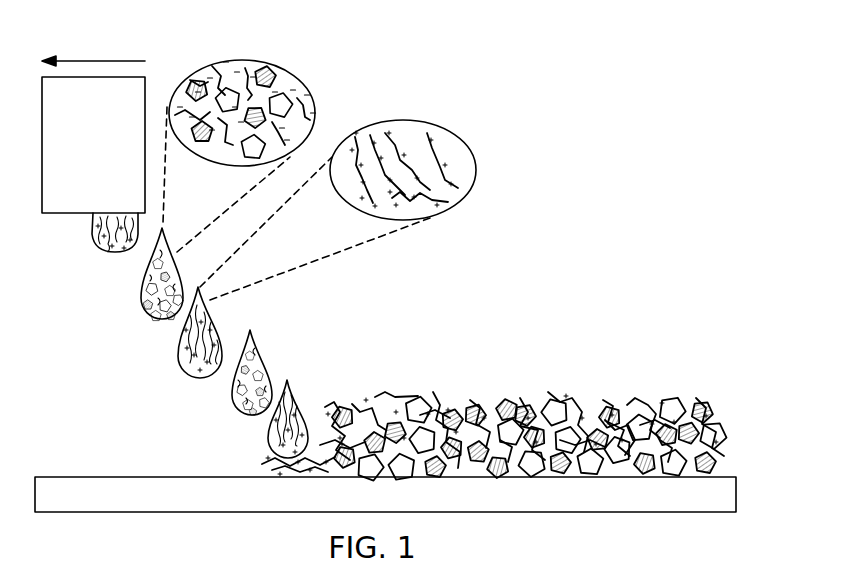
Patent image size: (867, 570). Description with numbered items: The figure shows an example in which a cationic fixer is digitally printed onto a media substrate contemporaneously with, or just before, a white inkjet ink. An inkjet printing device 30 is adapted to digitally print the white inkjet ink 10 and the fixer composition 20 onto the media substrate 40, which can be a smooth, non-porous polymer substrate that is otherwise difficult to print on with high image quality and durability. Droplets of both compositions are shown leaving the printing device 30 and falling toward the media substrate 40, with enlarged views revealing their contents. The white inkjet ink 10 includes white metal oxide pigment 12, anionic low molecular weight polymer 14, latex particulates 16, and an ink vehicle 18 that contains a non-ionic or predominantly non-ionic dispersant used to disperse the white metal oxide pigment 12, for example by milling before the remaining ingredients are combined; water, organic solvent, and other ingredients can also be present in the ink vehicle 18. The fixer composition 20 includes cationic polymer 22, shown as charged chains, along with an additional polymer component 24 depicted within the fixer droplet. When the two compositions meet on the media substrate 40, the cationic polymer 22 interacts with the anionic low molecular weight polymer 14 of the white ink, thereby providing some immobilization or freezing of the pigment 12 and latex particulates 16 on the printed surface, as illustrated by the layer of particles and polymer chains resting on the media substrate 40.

The white inkjet ink 10 is at (331, 98).
The white metal oxide pigment 12 is at (228, 93).
The anionic low molecular weight polymer 14 is at (245, 68).
The latex particulates 16 is at (268, 66).
The ink vehicle 18 is at (218, 74).
The fixer composition 20 is at (492, 145).
The cationic polymer 22 is at (423, 133).
The polymer chain 24 is at (397, 130).
The inkjet printing device 30 is at (93, 134).
The media substrate 40 is at (385, 494).